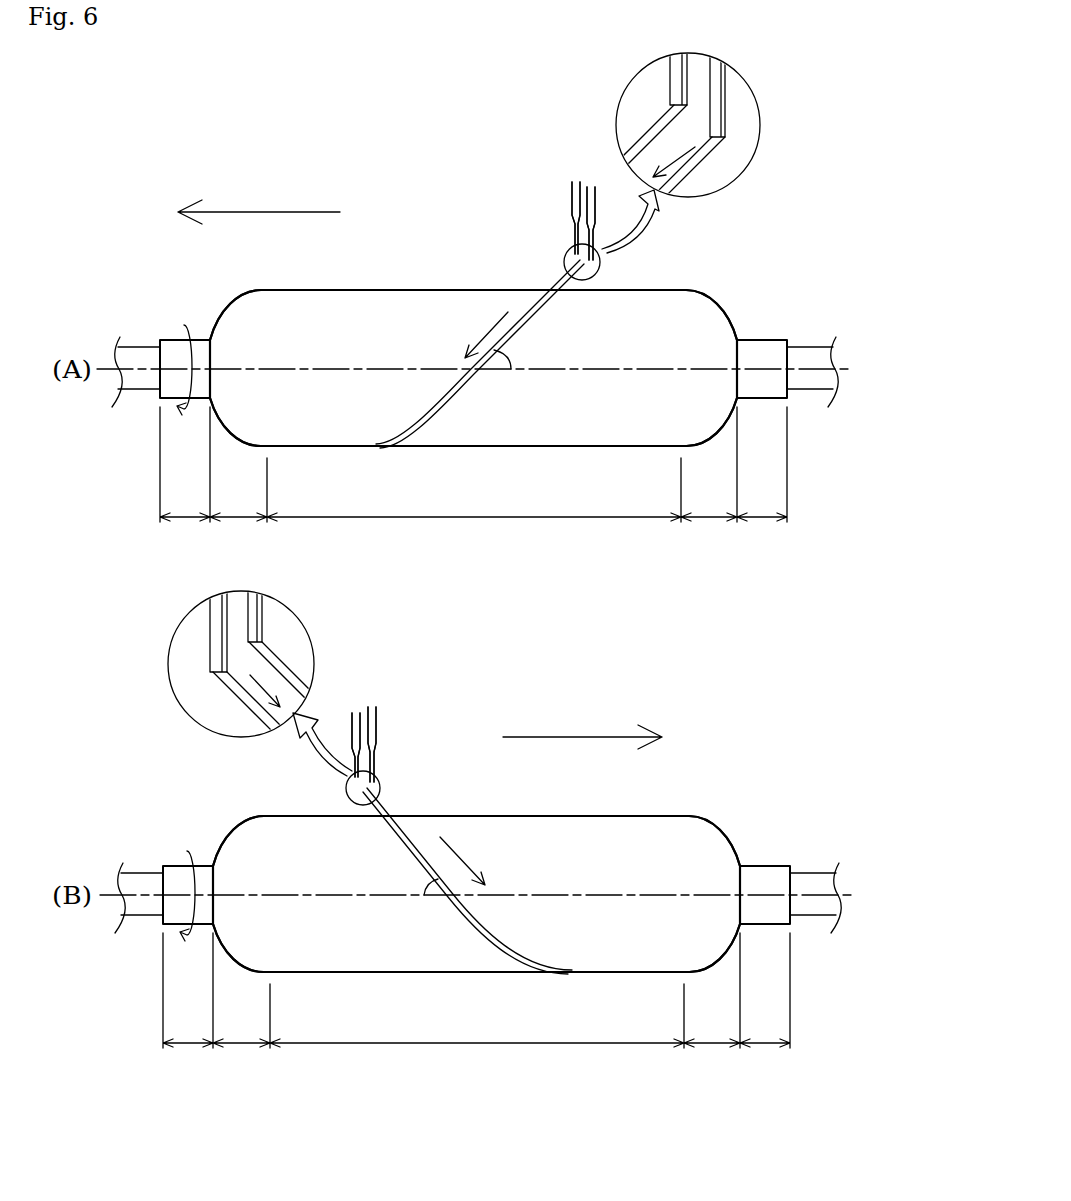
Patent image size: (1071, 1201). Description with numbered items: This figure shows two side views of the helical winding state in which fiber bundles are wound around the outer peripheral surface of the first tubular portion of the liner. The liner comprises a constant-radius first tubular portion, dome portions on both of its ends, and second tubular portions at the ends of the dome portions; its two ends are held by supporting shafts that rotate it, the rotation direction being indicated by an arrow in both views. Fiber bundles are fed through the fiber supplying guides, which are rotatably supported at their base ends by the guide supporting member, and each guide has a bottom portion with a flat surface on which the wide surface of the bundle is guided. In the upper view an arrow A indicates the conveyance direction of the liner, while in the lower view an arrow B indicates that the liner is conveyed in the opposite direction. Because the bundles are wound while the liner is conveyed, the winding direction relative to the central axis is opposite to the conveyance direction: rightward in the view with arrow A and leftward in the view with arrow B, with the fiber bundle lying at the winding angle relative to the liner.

The conveyance direction A is at (259, 202).
The conveyance direction B is at (582, 728).